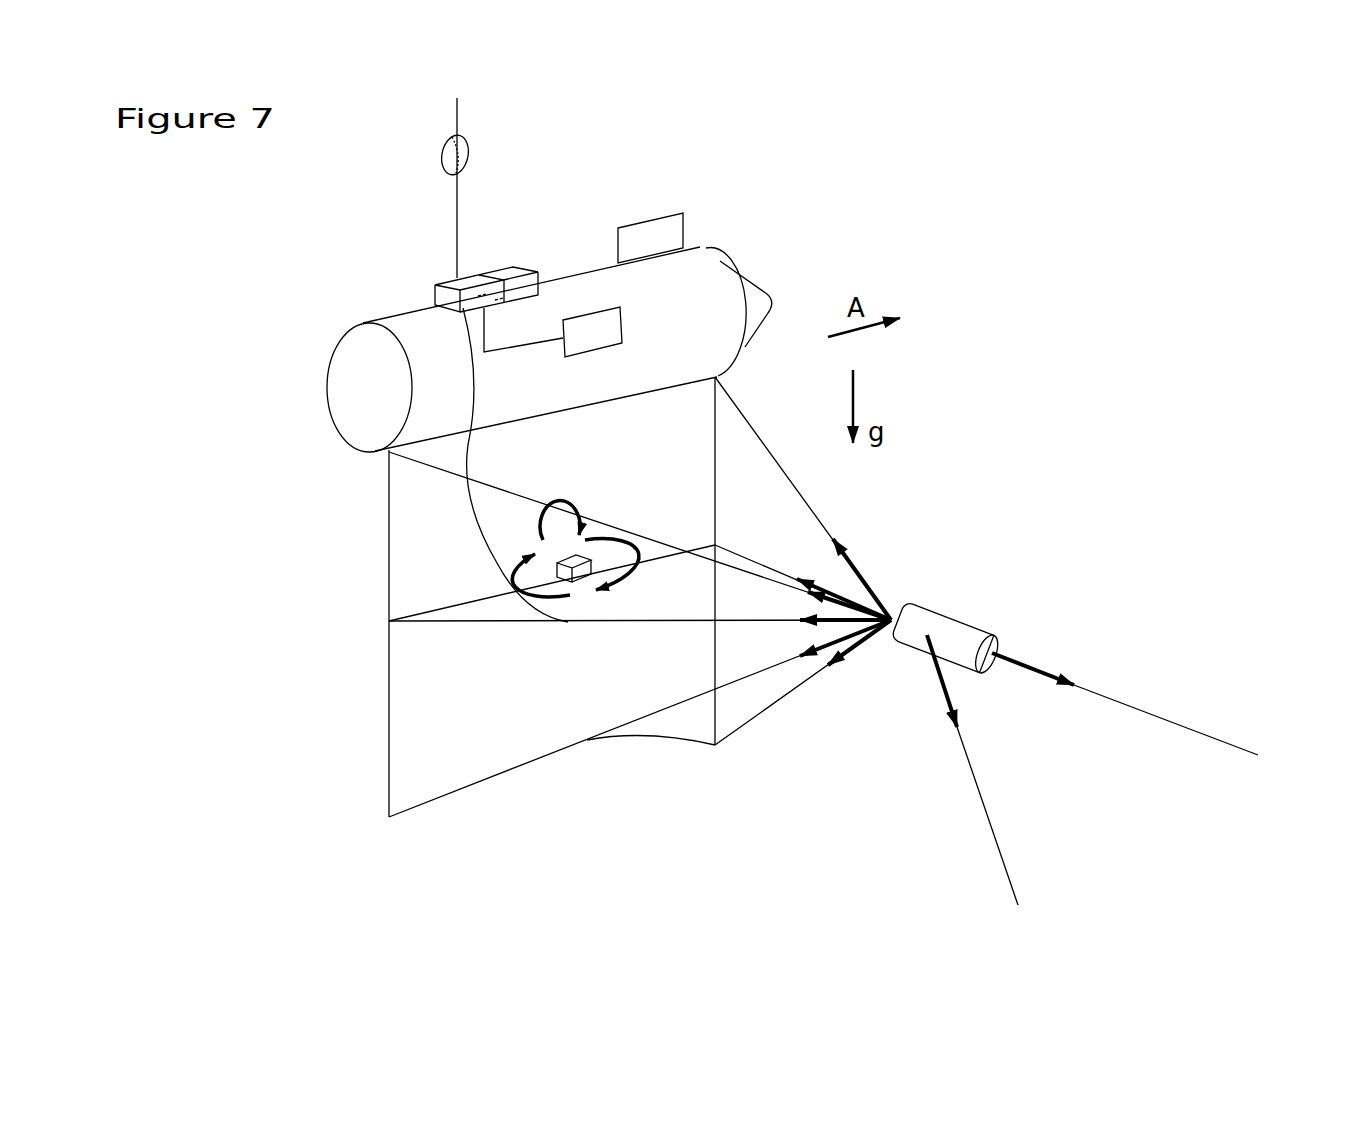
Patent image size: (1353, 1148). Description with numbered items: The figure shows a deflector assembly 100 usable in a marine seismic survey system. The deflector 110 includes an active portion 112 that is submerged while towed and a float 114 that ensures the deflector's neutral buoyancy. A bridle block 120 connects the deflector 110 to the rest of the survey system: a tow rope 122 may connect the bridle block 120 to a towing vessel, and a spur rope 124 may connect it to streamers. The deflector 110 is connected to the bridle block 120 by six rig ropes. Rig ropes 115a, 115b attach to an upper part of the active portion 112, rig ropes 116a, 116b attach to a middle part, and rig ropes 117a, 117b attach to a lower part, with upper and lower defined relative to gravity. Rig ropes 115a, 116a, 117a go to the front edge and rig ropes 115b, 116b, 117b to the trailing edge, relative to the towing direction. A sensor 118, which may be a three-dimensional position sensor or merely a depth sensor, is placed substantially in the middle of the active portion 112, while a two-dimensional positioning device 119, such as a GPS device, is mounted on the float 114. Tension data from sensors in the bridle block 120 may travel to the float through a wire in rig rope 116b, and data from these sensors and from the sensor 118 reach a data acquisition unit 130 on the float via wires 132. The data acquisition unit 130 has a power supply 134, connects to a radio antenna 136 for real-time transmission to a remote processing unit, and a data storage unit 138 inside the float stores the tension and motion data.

The deflector assembly 100 is at (1054, 362).
The deflector 110 is at (295, 470).
The active portion 112 is at (389, 587).
The float 114 is at (362, 422).
The rig rope 115a is at (814, 509).
The rig rope 115b is at (508, 487).
The rig rope 116a is at (737, 553).
The rig rope 116b is at (647, 630).
The rig rope 117a is at (763, 712).
The rig rope 117b is at (663, 710).
The sensor 118 is at (577, 553).
The 2D positioning device 119 is at (640, 224).
The bridle block 120 is at (945, 622).
The tow rope 122 is at (1118, 692).
The spur rope 124 is at (1003, 823).
The data acquisition unit 130 is at (436, 295).
The wires 132 is at (482, 538).
The power supply 134 is at (522, 282).
The radio antenna 136 is at (467, 153).
The data storage unit 138 is at (622, 313).